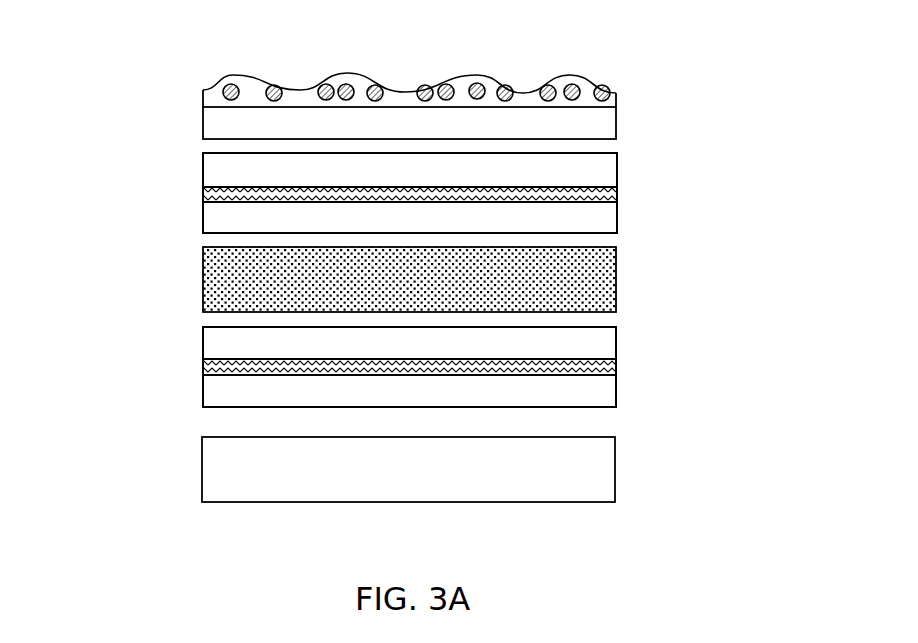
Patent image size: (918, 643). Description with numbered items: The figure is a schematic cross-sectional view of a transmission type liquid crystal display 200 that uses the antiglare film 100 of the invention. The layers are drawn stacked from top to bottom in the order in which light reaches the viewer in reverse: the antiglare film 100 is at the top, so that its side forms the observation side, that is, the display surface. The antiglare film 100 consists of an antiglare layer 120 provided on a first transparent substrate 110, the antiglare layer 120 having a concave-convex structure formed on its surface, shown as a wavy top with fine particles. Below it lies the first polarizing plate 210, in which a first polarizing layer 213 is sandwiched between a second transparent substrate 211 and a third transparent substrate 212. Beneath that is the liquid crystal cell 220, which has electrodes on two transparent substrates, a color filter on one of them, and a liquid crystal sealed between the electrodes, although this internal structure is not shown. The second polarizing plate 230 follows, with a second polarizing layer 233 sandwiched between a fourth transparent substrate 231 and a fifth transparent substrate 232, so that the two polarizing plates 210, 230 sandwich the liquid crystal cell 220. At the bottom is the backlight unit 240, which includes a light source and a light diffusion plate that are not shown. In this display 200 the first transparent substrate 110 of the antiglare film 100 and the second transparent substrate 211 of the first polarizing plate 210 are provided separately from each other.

The transmission type liquid crystal display 200 is at (440, 25).
The antiglare film 100 is at (633, 92).
The first transparent substrate 110 is at (228, 118).
The antiglare layer 120 is at (224, 92).
The first polarizing plate 210 is at (639, 153).
The second transparent substrate 211 is at (218, 169).
The first polarizing layer 213 is at (220, 192).
The third transparent substrate 212 is at (227, 224).
The liquid crystal cell 220 is at (595, 282).
The second polarizing plate 230 is at (645, 327).
The fourth transparent substrate 231 is at (222, 339).
The second polarizing layer 233 is at (218, 370).
The fifth transparent substrate 232 is at (230, 395).
The backlight unit 240 is at (596, 477).